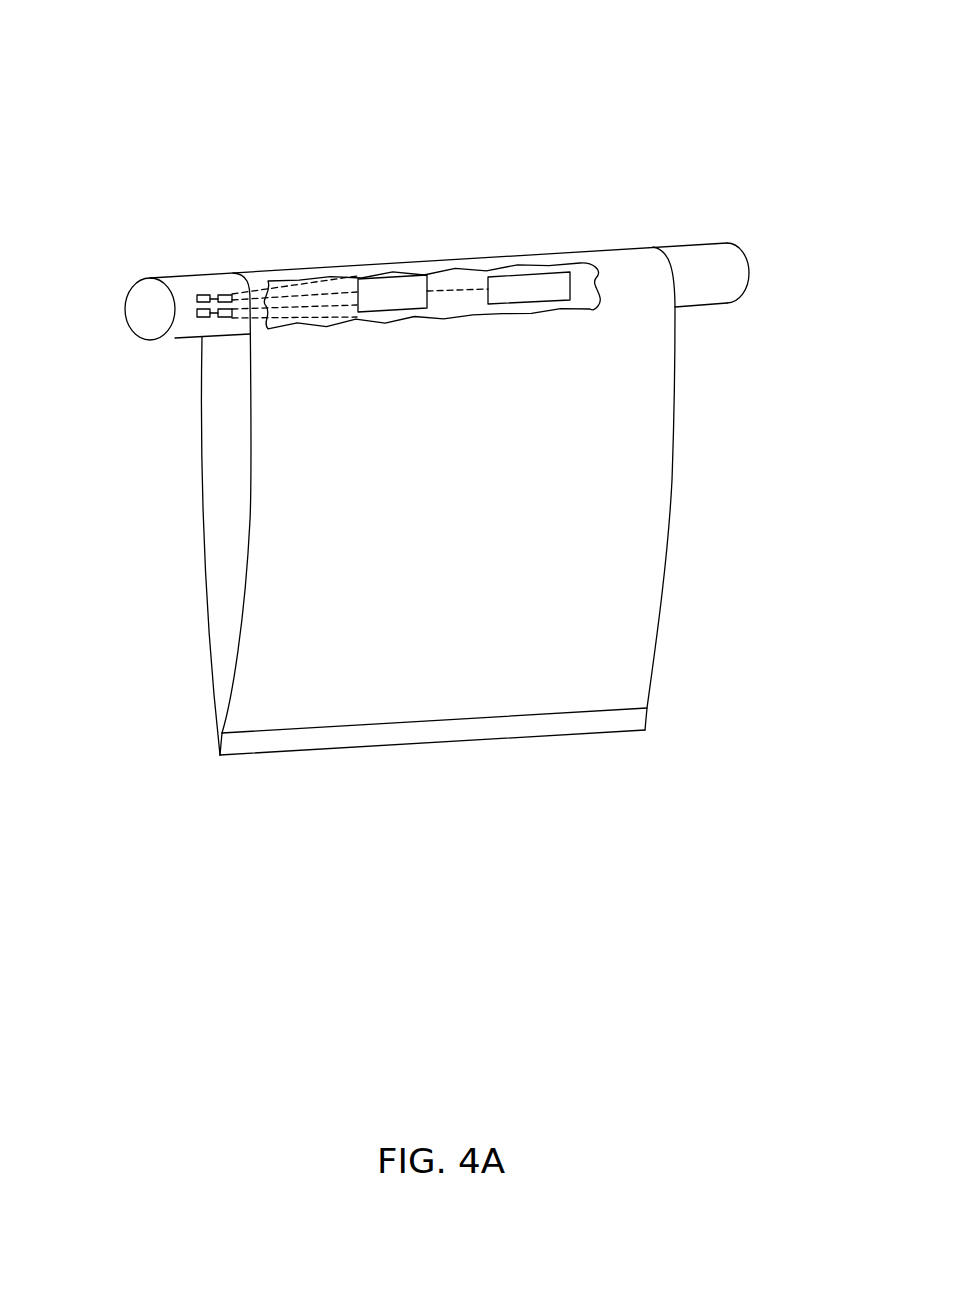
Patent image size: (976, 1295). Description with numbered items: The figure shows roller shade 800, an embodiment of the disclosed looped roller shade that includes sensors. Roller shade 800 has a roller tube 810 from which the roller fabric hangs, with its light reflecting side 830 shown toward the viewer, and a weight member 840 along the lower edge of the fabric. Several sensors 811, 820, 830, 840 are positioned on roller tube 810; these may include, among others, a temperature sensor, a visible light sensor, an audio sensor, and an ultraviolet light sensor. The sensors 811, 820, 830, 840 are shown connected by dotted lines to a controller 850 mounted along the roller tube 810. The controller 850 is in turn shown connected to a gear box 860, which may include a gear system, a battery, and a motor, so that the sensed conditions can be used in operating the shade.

The roller shade 800 is at (186, 74).
The roller tube 810 is at (177, 287).
The sensor 811 is at (200, 294).
The sensor 820 is at (225, 294).
The light reflecting side 830 is at (197, 322).
The weight member 840 is at (562, 728).
The controller 850 is at (392, 292).
The gear box 860 is at (537, 285).